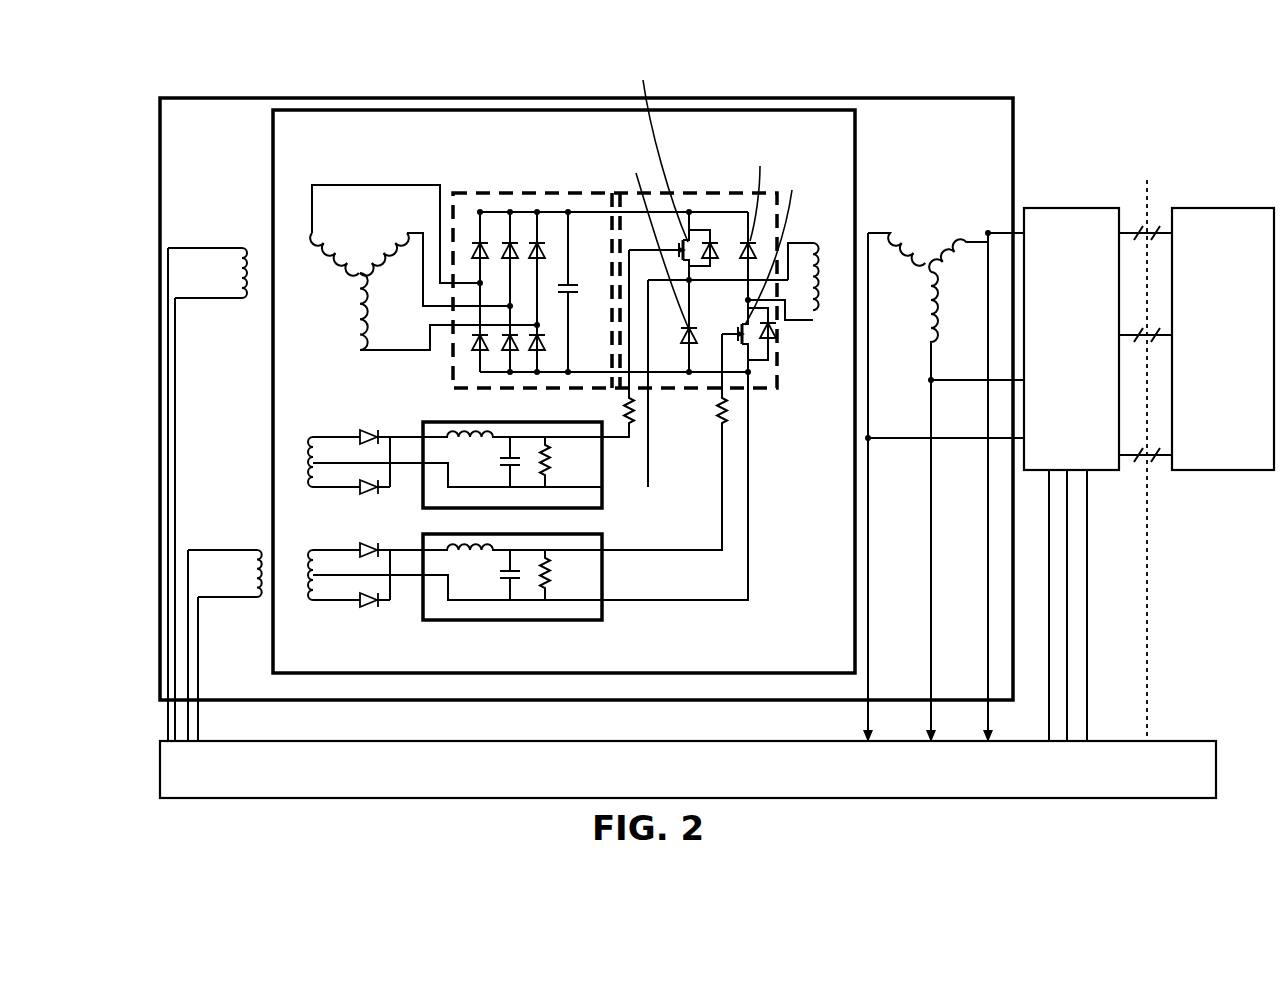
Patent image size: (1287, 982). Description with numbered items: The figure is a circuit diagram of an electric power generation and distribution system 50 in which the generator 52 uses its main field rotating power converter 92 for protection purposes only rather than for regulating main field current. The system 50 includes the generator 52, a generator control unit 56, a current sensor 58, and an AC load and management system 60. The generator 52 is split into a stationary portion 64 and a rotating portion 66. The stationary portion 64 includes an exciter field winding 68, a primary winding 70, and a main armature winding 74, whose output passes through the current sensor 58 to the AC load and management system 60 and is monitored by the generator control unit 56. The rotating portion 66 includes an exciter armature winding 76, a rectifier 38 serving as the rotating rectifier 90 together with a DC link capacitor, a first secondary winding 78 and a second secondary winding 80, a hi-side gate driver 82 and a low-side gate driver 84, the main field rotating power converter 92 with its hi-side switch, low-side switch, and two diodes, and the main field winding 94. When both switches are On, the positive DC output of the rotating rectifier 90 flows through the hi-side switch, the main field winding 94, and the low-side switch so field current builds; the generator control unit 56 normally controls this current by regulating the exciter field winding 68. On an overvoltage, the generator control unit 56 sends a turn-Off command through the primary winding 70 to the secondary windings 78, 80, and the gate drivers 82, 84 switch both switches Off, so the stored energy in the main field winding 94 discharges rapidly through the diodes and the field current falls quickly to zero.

The electric power generation and distribution system 50 is at (228, 66).
The generator 52 is at (336, 94).
The stationary portion 64 is at (352, 441).
The rotating portion 66 is at (619, 331).
The rotating rectifier 90 is at (538, 192).
The rectifier 38 is at (453, 388).
The exciter field winding 68 is at (242, 298).
The primary winding 70 is at (257, 550).
The exciter armature winding 76 is at (380, 265).
The first secondary winding 78 is at (313, 437).
The second secondary winding 80 is at (313, 550).
The hi-side gate driver 82 is at (602, 495).
The low-side gate driver 84 is at (602, 563).
The main field rotating power converter 92 is at (777, 388).
The main field winding 94 is at (815, 243).
The main armature winding 74 is at (964, 244).
The current sensor 58 is at (1040, 208).
The AC load and management system 60 is at (1190, 208).
The generator control unit 56 is at (1216, 781).